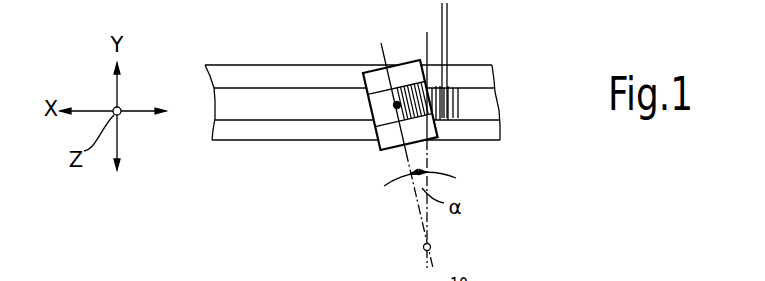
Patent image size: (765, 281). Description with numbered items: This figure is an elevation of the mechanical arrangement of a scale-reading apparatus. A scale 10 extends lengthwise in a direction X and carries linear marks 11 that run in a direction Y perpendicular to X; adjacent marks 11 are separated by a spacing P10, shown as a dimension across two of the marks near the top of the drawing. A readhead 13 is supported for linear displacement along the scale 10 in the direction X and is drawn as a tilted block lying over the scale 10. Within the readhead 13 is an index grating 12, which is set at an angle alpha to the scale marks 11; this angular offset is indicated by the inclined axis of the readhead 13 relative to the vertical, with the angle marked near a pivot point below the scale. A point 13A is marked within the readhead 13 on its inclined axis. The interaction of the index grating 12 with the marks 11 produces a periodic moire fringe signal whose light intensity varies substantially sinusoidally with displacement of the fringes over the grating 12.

The scale 10 is at (497, 112).
The linear marks 11 is at (449, 98).
The index grating 12 is at (374, 78).
The readhead 13 is at (366, 70).
The pivot point of tool head 13A is at (395, 107).
The spacing of the marks P10 is at (408, 12).